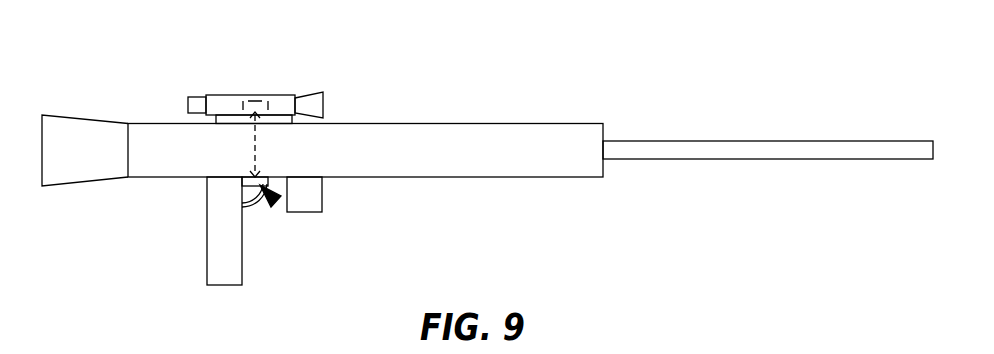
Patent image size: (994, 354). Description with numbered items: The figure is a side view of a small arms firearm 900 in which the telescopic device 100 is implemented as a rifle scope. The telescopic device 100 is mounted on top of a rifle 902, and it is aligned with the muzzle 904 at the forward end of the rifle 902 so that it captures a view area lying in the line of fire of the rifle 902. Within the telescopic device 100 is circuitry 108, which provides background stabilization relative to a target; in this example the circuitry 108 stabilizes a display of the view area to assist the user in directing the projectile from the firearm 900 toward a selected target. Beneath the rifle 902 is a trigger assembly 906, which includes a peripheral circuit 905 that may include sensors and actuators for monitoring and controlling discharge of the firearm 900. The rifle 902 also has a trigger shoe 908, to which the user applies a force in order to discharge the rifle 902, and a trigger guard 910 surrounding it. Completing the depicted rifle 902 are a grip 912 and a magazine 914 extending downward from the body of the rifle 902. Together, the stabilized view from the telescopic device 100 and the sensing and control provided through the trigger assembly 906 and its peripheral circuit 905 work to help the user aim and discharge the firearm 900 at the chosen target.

The small arms firearm 900 is at (108, 13).
The rifle 902 is at (128, 123).
The muzzle 904 is at (737, 141).
The telescopic device 100 is at (230, 95).
The circuitry 108 is at (258, 100).
The trigger assembly 906 is at (247, 180).
The grip 912 is at (207, 228).
The magazine 914 is at (322, 187).
The peripheral circuit 905 is at (276, 203).
The trigger shoe 908 is at (253, 205).
The trigger guard 910 is at (253, 210).